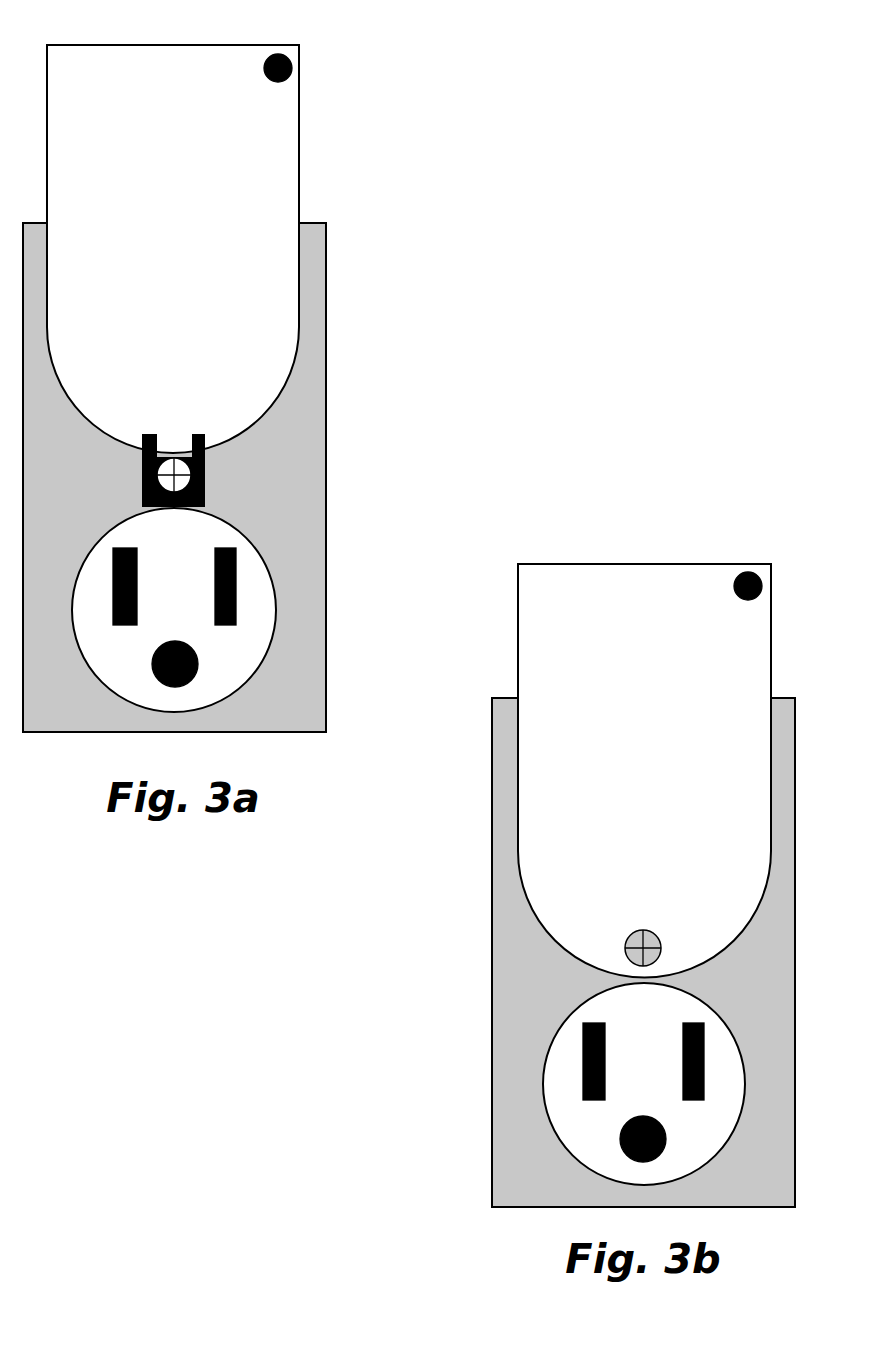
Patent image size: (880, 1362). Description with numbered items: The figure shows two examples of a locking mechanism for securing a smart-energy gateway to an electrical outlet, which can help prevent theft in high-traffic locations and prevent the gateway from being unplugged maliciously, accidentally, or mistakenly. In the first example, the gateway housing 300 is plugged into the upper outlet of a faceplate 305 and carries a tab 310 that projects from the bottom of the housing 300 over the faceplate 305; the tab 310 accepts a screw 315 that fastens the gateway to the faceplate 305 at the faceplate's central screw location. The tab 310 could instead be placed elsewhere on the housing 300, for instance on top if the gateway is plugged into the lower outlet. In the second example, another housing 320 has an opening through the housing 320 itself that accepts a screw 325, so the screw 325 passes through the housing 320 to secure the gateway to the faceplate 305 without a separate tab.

In FIG. 3A, the housing 300 is at (299, 145).
In FIG. 3A, the faceplate 305 is at (325, 317).
In FIG. 3B, the faceplate 305 is at (492, 1112).
In FIG. 3A, the tab 310 is at (205, 495).
In FIG. 3A, the screw 315 is at (181, 470).
In FIG. 3B, the housing 320 is at (654, 564).
In FIG. 3B, the screw 325 is at (637, 958).